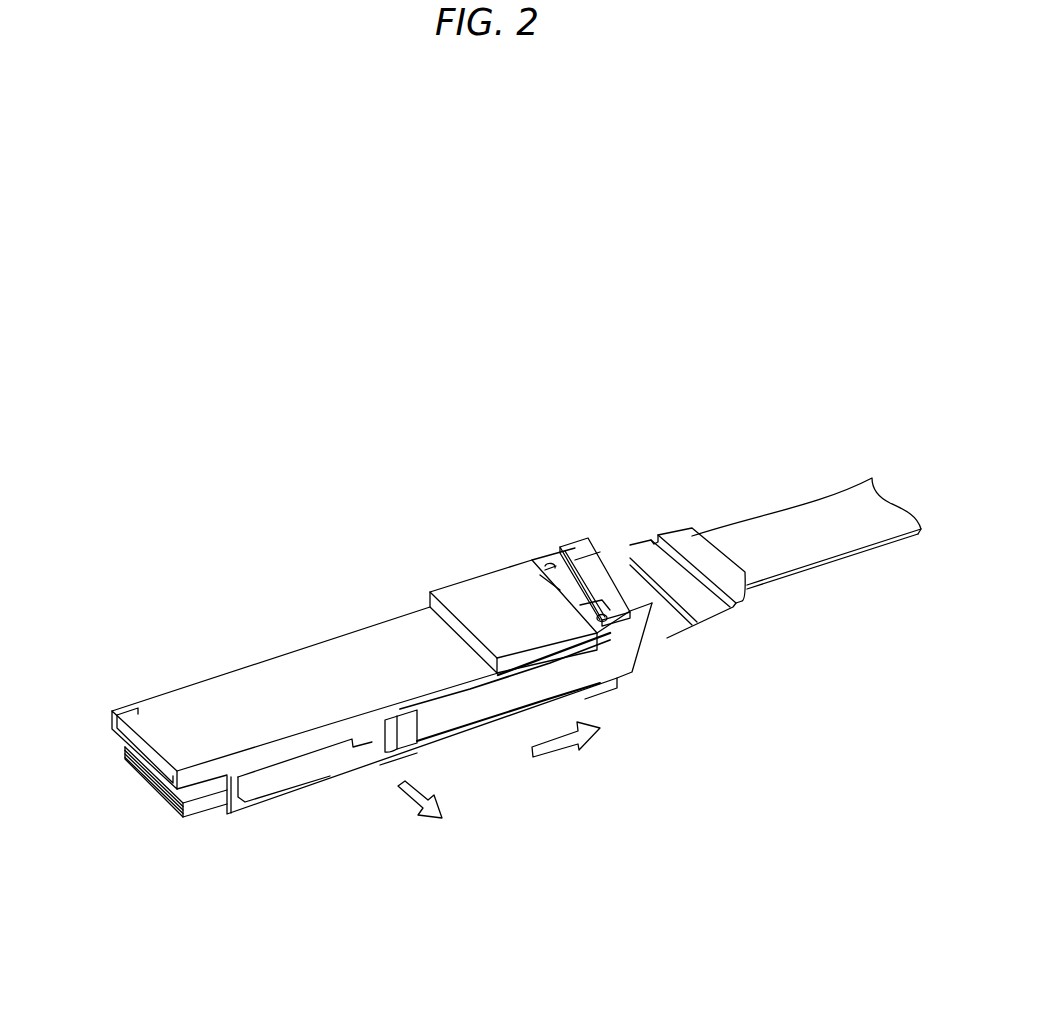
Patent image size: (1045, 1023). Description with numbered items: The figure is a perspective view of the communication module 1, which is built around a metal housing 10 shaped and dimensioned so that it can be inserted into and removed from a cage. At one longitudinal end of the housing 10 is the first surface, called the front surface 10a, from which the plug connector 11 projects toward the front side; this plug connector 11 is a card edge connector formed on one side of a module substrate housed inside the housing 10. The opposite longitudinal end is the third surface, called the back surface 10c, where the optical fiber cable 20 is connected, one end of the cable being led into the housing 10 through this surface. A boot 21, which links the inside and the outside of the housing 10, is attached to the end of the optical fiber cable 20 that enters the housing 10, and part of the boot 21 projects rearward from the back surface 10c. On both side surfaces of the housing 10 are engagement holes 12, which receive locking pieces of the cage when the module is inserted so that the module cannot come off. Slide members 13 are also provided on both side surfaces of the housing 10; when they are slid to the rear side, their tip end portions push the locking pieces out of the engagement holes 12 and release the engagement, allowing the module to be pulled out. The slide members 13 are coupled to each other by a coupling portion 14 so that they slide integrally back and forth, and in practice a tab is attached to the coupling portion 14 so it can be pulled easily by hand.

The communication module 1 is at (419, 450).
The housing 10 is at (270, 619).
The front surface 10a is at (222, 813).
The back surface 10c is at (620, 682).
The plug connector 11 is at (143, 780).
The engagement holes 12 is at (376, 732).
The slide members 13 is at (457, 723).
The coupling portion 14 is at (580, 546).
The optical fiber cable 20 is at (771, 482).
The boot 21 is at (747, 602).